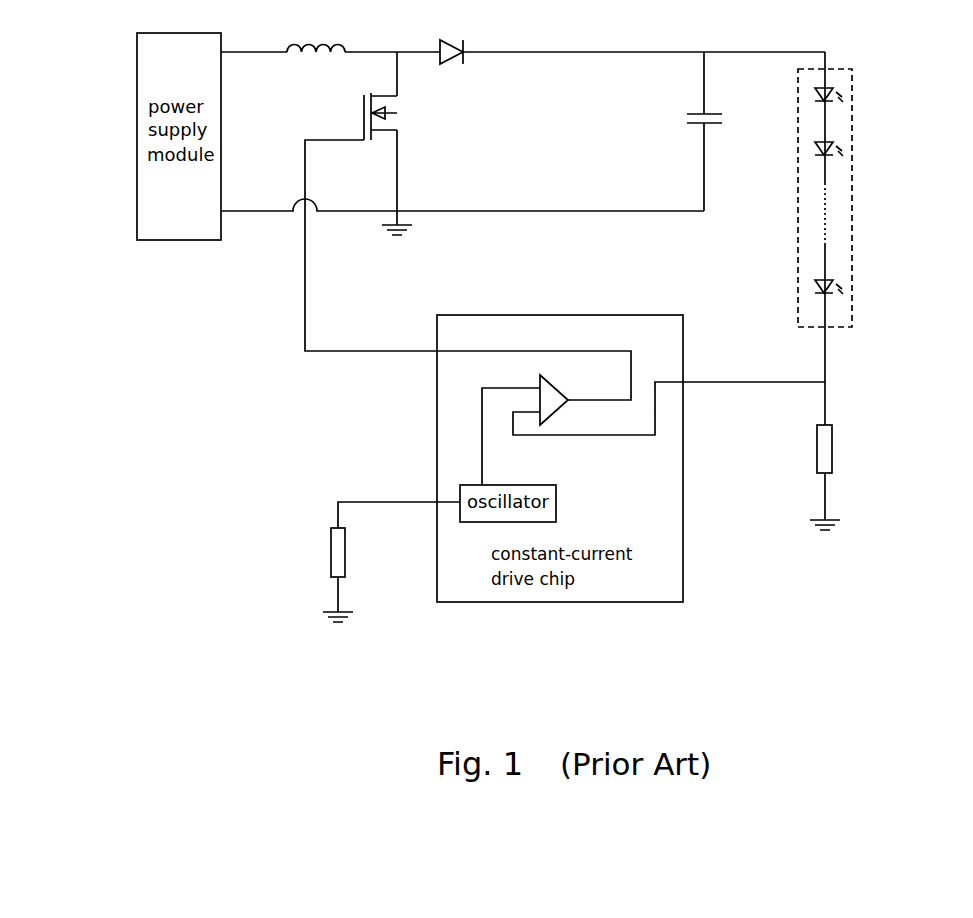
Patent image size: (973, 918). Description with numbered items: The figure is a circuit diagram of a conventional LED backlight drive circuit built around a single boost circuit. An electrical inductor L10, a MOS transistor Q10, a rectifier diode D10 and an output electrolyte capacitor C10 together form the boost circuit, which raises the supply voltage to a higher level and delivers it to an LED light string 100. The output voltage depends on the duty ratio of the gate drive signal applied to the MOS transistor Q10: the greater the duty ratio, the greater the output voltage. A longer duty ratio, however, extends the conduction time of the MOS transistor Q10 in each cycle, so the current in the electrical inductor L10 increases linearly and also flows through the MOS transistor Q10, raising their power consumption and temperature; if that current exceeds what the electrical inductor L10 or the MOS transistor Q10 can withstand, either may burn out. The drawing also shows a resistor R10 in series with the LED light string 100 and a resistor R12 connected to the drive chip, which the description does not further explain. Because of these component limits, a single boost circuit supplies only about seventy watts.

The electrical inductor L10 is at (316, 32).
The rectifier diode D10 is at (461, 33).
The MOS transistor Q10 is at (354, 114).
The output electrolyte capacitor C10 is at (682, 119).
The LED light string 100 is at (852, 197).
The current sensing resistor R10 is at (798, 449).
The oscillator resistor R12 is at (317, 552).